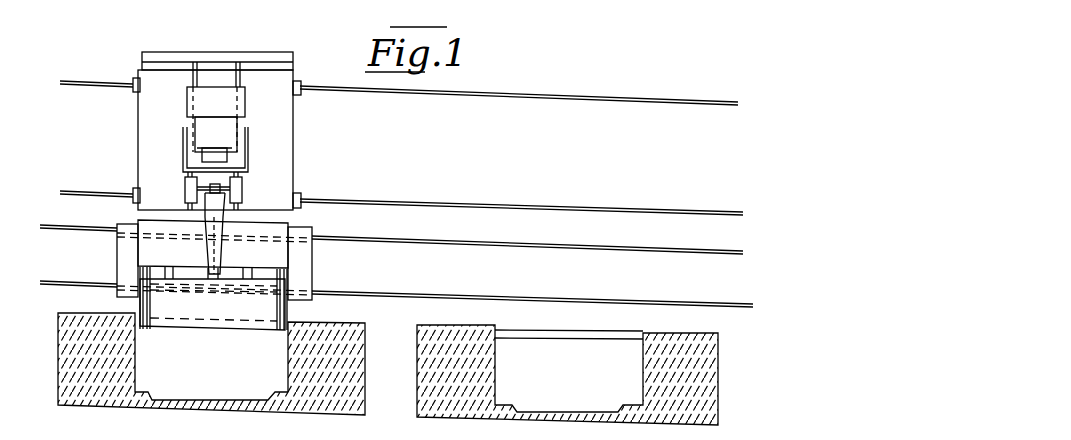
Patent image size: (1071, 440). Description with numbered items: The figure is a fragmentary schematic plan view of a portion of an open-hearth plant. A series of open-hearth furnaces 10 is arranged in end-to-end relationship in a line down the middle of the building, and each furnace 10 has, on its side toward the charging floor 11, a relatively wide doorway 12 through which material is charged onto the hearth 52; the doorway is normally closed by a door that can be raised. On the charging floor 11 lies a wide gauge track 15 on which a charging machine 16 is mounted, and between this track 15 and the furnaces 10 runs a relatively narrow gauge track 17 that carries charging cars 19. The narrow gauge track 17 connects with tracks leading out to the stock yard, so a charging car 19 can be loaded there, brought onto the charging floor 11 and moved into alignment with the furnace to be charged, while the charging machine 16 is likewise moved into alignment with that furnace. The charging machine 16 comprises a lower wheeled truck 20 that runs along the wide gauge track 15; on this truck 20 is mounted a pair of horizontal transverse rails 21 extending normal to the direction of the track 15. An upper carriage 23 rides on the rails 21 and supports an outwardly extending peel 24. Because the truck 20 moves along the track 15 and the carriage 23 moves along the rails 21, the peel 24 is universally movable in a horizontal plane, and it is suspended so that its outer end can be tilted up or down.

The open-hearth furnace 10 is at (417, 369).
The charging floor 11 is at (519, 160).
The doorway 12 is at (391, 303).
The wide gauge track 15 is at (401, 194).
The charging machine 16 is at (244, 131).
The narrow gauge track 17 is at (391, 237).
The charging car 19 is at (241, 260).
The lower wheeled truck 20 is at (243, 131).
The horizontal transverse rails 21 is at (222, 107).
The upper carriage 23 is at (237, 149).
The peel 24 is at (239, 233).
The hearth 52 is at (223, 377).